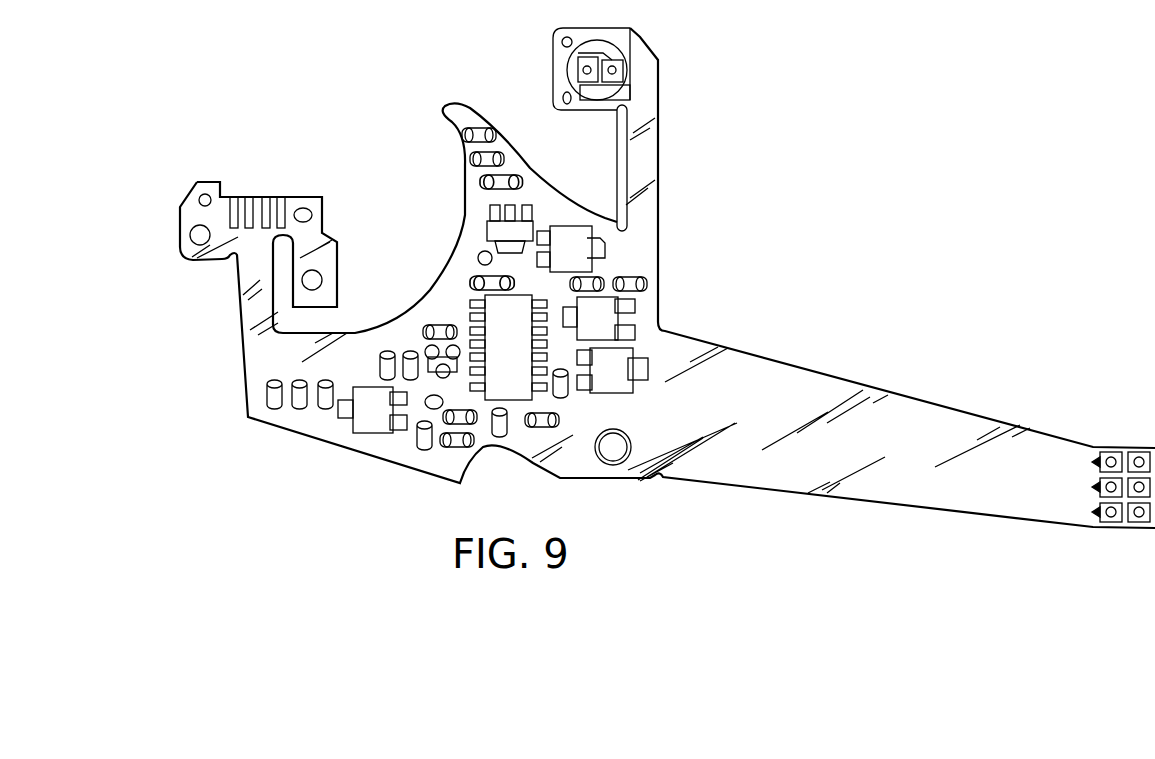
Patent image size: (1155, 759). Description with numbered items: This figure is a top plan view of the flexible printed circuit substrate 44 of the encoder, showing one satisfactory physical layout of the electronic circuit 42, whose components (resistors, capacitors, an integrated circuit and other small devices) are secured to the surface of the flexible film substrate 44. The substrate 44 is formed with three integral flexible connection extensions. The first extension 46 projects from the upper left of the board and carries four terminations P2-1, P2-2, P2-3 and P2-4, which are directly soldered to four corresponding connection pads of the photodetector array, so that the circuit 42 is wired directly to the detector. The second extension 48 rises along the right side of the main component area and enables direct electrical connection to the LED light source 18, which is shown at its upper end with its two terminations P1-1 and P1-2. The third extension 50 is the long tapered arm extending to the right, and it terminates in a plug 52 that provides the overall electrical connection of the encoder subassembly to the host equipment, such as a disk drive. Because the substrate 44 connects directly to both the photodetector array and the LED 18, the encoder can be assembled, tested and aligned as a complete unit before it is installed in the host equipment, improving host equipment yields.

The LED light source 18 is at (567, 67).
The electronic circuit 42 is at (214, 472).
The flexible film printed circuit substrate 44 is at (300, 423).
The first extension 46 is at (303, 207).
The second extension 48 is at (666, 115).
The third extension 50 is at (1040, 440).
The plug 52 is at (1108, 533).
The LED connection termination P1-1 is at (587, 60).
The LED connection termination P1-2 is at (622, 52).
The termination P2-1 is at (232, 197).
The termination P2-2 is at (250, 197).
The termination P2-3 is at (265, 197).
The termination P2-4 is at (281, 197).